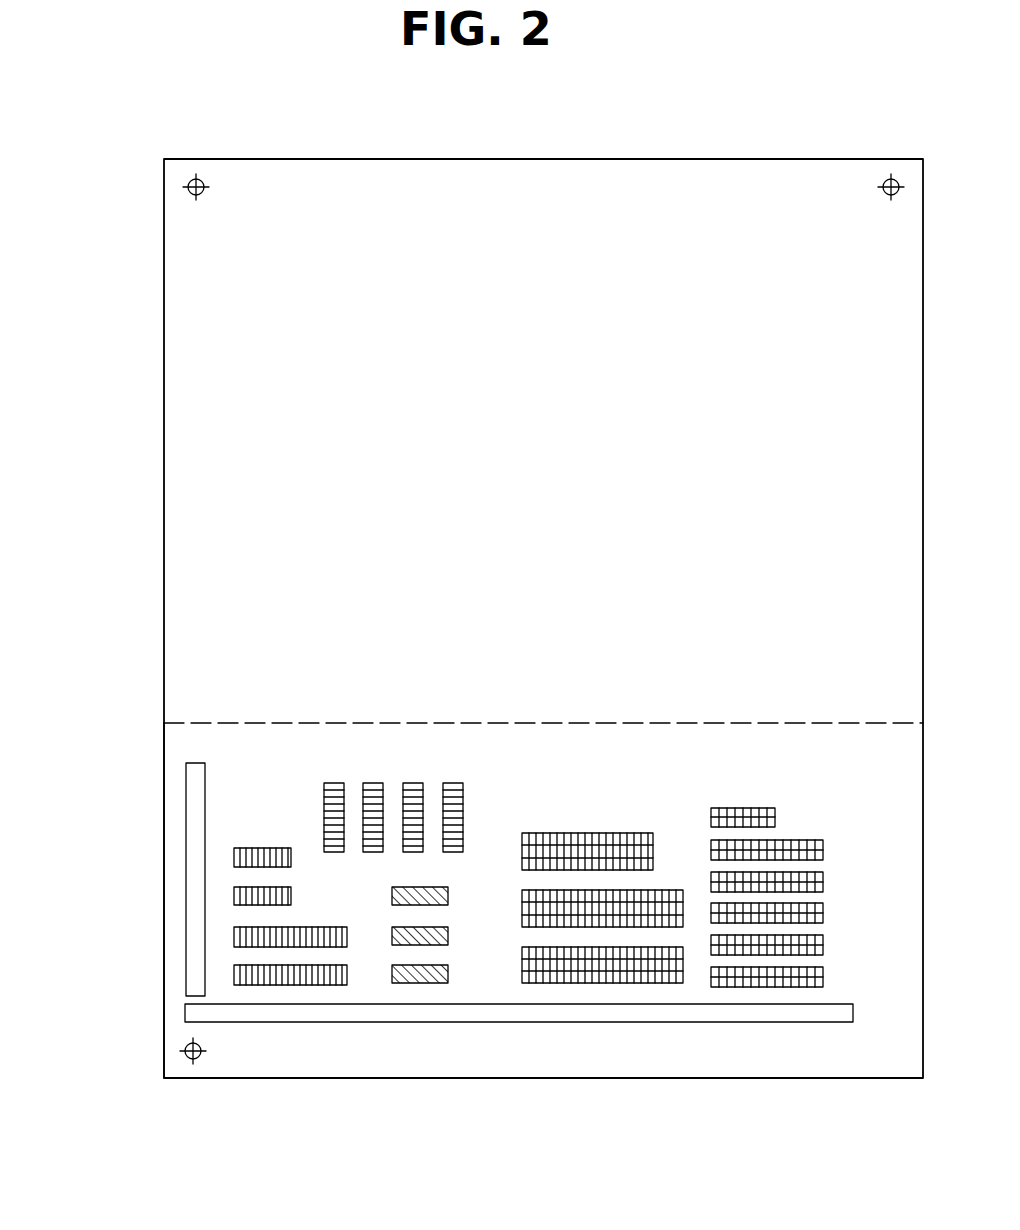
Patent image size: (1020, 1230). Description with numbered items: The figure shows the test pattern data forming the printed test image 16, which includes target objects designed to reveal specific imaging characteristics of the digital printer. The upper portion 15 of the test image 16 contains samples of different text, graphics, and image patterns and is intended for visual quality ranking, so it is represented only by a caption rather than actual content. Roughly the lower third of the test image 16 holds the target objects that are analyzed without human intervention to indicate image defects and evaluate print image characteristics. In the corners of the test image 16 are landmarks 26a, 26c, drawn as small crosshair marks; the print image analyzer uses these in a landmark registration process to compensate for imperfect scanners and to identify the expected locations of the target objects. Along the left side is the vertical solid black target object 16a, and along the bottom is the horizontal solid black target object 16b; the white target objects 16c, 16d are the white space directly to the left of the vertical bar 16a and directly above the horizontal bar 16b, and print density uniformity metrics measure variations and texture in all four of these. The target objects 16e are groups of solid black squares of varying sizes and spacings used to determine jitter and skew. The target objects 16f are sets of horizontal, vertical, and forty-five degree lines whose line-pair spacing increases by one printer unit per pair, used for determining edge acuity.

The test image 16 is at (470, 141).
The upper portion 15 is at (561, 278).
The landmark 26a is at (196, 179).
The landmark 26c is at (891, 179).
The vertical solid black target object 16a is at (192, 782).
The horizontal solid black target object 16b is at (338, 1013).
The white target object 16c is at (172, 893).
The white target object 16d is at (473, 995).
The target objects of solid black squares 16e is at (673, 890).
The line target objects 16f is at (468, 855).